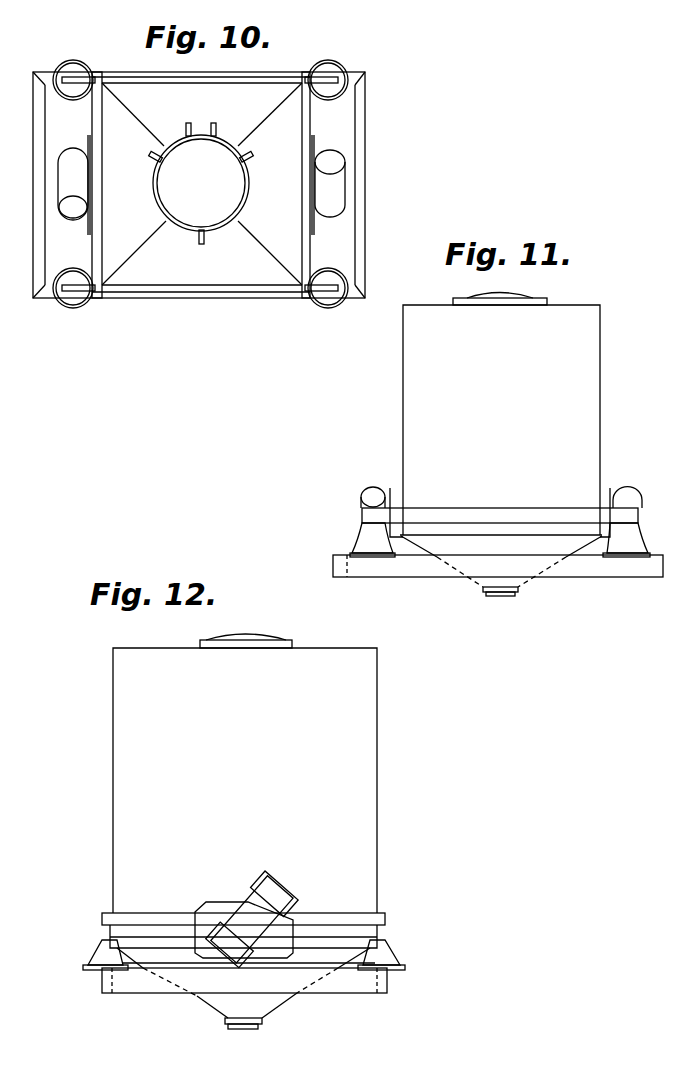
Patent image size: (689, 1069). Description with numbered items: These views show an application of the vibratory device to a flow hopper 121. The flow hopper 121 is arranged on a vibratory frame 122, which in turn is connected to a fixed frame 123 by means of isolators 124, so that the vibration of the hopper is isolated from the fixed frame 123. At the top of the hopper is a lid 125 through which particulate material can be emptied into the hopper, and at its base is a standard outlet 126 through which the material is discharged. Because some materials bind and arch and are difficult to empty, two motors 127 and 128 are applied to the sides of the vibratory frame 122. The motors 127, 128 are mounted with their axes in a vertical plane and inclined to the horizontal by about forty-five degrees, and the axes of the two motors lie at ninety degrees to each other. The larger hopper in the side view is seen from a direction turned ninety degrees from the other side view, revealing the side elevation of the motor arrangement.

In FIG. 10, the flow hopper 121 is at (208, 272).
In FIG. 11, the flow hopper 121 is at (408, 396).
In FIG. 12, the flow hopper 121 is at (318, 794).
In FIG. 11, the vibratory frame 122 is at (474, 507).
In FIG. 12, the vibratory frame 122 is at (145, 940).
In FIG. 11, the fixed frame 123 is at (406, 571).
In FIG. 12, the fixed frame 123 is at (144, 988).
In FIG. 10, the isolators 124 is at (332, 63).
In FIG. 11, the isolators 124 is at (358, 539).
In FIG. 12, the isolators 124 is at (98, 948).
In FIG. 10, the lid 125 is at (215, 150).
In FIG. 11, the lid 125 is at (500, 299).
In FIG. 12, the lid 125 is at (229, 636).
In FIG. 11, the outlet 126 is at (500, 590).
In FIG. 12, the outlet 126 is at (264, 1006).
In FIG. 10, the motor 127 is at (338, 179).
In FIG. 11, the motor 127 is at (623, 487).
In FIG. 12, the motor 127 is at (270, 900).
In FIG. 10, the motor 128 is at (75, 166).
In FIG. 11, the motor 128 is at (372, 487).